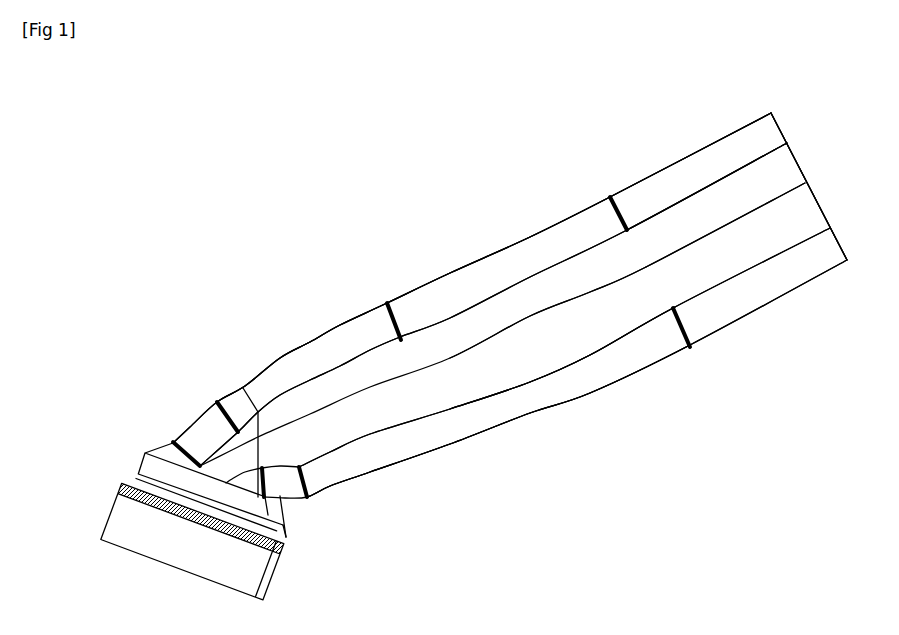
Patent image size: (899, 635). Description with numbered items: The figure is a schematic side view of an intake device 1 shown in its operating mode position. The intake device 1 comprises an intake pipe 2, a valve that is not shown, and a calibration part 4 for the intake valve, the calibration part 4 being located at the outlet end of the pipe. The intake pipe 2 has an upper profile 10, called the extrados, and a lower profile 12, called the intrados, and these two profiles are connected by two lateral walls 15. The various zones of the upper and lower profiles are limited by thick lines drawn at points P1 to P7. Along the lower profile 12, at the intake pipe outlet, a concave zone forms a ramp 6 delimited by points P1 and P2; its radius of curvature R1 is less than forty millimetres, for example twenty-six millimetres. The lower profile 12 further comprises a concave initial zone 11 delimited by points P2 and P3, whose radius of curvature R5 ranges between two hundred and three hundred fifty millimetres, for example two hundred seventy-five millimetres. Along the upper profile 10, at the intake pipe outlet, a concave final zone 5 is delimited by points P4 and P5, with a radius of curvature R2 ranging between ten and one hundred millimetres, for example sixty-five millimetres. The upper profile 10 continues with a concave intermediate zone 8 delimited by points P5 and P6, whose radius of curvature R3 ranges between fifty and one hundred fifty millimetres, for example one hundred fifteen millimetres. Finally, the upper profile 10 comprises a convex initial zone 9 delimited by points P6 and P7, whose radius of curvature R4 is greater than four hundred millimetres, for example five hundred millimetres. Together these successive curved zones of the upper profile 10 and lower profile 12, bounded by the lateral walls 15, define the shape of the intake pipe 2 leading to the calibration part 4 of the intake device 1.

The intake device 1 is at (183, 186).
The intake pipe 2 is at (708, 192).
The calibration part 4 is at (128, 546).
The final zone 5 is at (190, 427).
The ramp 6 is at (316, 515).
The intermediate zone 8 is at (297, 346).
The initial zone 9 is at (518, 246).
The upper profile 10 is at (393, 244).
The initial zone 11 is at (535, 415).
The lower profile 12 is at (793, 285).
The lateral walls 15 is at (572, 325).
The point P1 is at (283, 535).
The point P2 is at (290, 495).
The point P3 is at (694, 339).
The point P4 is at (161, 443).
The point P5 is at (214, 401).
The point P6 is at (373, 308).
The point P7 is at (602, 198).
The radius of curvature R1 is at (262, 481).
The radius of curvature R2 is at (205, 434).
The radius of curvature R3 is at (302, 352).
The radius of curvature R4 is at (498, 250).
The radius of curvature R5 is at (498, 421).